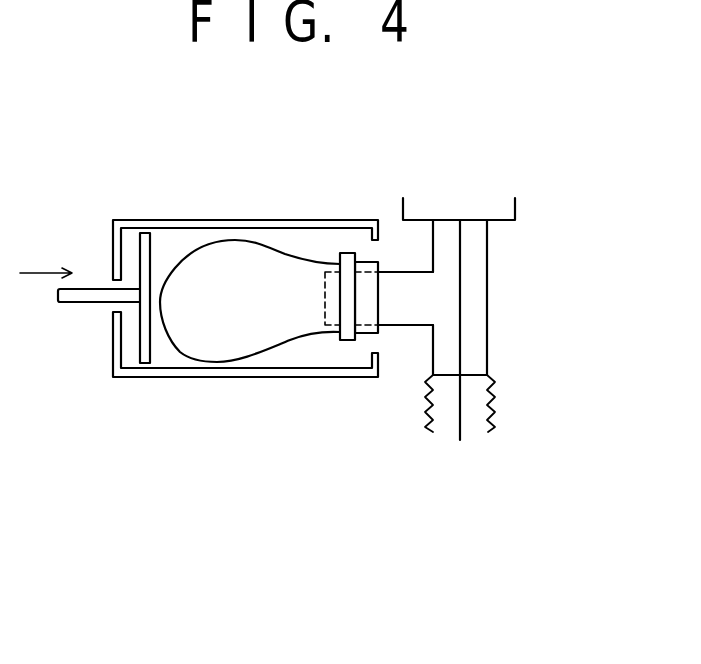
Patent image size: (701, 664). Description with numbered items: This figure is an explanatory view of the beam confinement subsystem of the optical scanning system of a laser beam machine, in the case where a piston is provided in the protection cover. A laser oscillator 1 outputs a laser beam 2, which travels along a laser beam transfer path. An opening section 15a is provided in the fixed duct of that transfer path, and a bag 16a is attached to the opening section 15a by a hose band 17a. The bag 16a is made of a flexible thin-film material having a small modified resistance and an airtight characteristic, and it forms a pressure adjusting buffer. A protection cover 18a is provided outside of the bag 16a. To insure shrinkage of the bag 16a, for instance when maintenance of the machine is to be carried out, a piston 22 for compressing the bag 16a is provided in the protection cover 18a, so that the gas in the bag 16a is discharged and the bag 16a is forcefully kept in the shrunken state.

The laser oscillator 1 is at (500, 205).
The laser beam 2 is at (460, 280).
The opening section 15a is at (417, 307).
The bag 16a is at (220, 240).
The hose band 17a is at (347, 341).
The protection cover 18a is at (180, 420).
The piston 22 is at (72, 303).